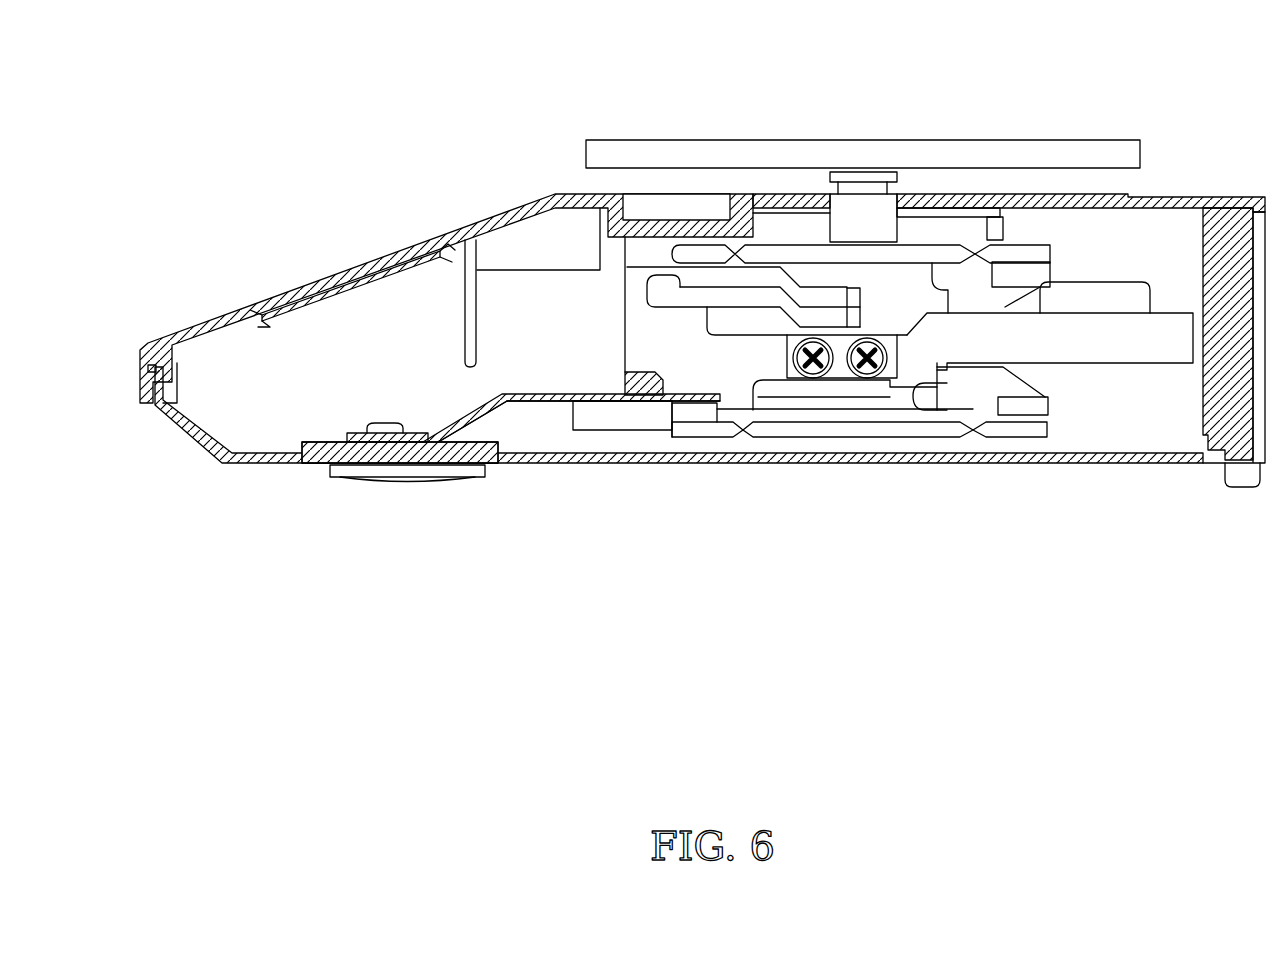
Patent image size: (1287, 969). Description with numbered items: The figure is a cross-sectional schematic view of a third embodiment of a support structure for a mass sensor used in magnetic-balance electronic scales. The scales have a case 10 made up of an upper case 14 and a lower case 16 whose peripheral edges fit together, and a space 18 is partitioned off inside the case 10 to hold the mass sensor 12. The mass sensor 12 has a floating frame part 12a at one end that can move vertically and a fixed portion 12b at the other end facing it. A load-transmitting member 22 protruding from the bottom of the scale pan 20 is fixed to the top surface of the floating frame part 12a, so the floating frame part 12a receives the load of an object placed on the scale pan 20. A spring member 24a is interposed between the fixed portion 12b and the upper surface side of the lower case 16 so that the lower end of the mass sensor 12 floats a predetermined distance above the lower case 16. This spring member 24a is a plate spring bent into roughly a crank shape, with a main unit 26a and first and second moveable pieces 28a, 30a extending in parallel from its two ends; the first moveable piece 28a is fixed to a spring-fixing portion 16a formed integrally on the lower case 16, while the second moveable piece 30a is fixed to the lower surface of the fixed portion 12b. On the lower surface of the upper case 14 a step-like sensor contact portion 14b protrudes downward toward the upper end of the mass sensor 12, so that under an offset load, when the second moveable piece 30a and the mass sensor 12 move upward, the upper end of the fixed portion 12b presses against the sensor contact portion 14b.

The case 10 is at (702, 321).
The mass sensor 12 is at (901, 267).
The floating frame part 12a is at (977, 247).
The fixed portion 12b is at (640, 340).
The upper case 14 is at (446, 238).
The sensor contact portion 14b is at (645, 218).
The lower case 16 is at (252, 465).
The spring-fixing portion 16a is at (317, 452).
The space 18 is at (1088, 258).
The scale pan 20 is at (1047, 152).
The load-transmitting member 22 is at (857, 207).
The spring member 24a is at (541, 430).
The main unit 26a is at (483, 410).
The first moveable piece 28a is at (390, 443).
The second moveable piece 30a is at (573, 407).